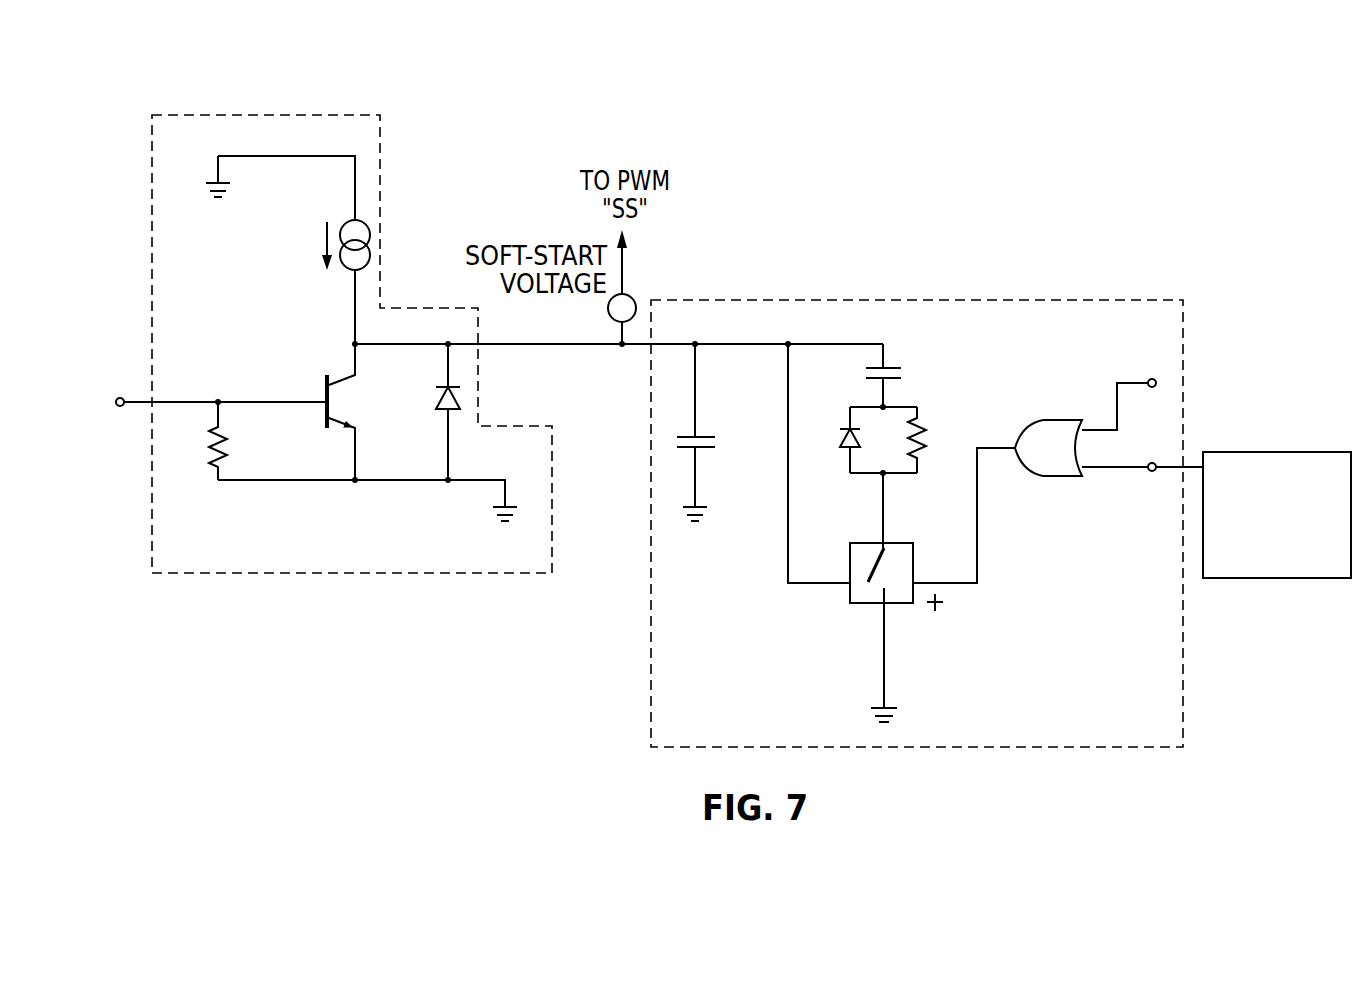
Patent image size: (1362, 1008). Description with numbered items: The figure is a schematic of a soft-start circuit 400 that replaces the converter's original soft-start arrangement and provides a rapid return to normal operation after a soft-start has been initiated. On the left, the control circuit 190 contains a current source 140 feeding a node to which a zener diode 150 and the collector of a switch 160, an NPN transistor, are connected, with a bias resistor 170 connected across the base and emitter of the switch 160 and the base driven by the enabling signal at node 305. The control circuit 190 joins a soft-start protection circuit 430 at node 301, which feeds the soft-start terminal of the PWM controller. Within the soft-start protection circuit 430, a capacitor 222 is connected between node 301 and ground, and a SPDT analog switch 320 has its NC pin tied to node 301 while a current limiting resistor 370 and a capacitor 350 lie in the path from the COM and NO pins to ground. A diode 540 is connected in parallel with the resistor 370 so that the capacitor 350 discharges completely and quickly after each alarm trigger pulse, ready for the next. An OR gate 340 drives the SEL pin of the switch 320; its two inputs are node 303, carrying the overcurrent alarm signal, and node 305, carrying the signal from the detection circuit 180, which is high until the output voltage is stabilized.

The control circuit 190 is at (246, 113).
The current source 140 is at (347, 273).
The node 305 is at (120, 397).
The switch 160 is at (323, 385).
The bias resistor 170 is at (228, 445).
The zener diode 150 is at (440, 411).
The node 301 is at (630, 297).
The soft-start protection circuit 430 is at (978, 298).
The capacitor 222 is at (705, 436).
The capacitor 350 is at (888, 366).
The diode 540 is at (840, 426).
The resistor 370 is at (925, 420).
The switch 320 is at (862, 542).
The OR gate 340 is at (1050, 418).
The node 303 is at (1150, 378).
The detection circuit 180 is at (1310, 451).
The soft-start circuit 400 is at (1212, 142).